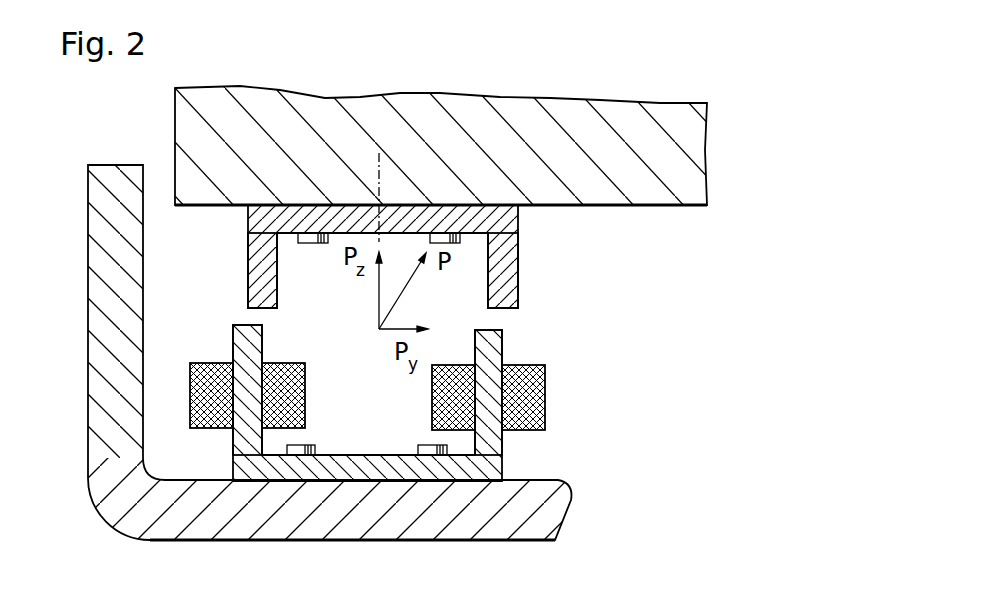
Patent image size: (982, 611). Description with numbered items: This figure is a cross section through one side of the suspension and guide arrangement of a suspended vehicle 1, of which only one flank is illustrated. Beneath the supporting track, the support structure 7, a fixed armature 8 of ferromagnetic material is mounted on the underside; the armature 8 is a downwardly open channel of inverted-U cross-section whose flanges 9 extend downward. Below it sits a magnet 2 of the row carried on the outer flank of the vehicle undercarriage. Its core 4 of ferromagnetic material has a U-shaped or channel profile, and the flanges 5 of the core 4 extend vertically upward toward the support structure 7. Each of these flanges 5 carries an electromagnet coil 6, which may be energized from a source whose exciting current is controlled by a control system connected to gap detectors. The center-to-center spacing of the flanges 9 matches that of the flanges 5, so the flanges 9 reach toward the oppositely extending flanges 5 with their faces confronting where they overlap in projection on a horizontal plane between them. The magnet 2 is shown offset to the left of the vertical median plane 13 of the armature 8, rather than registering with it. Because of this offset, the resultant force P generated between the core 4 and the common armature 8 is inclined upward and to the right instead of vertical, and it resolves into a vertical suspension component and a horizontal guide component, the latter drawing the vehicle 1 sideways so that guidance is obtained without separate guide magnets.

The suspended vehicle 1 is at (560, 517).
The magnet 2 is at (391, 402).
The core 4 is at (492, 462).
The flanges 5 is at (243, 343).
The electromagnet coil 6 is at (208, 416).
The support structure 7 is at (648, 197).
The armature 8 is at (387, 258).
The flanges 9 is at (253, 262).
The vertical median plane 13 is at (381, 172).